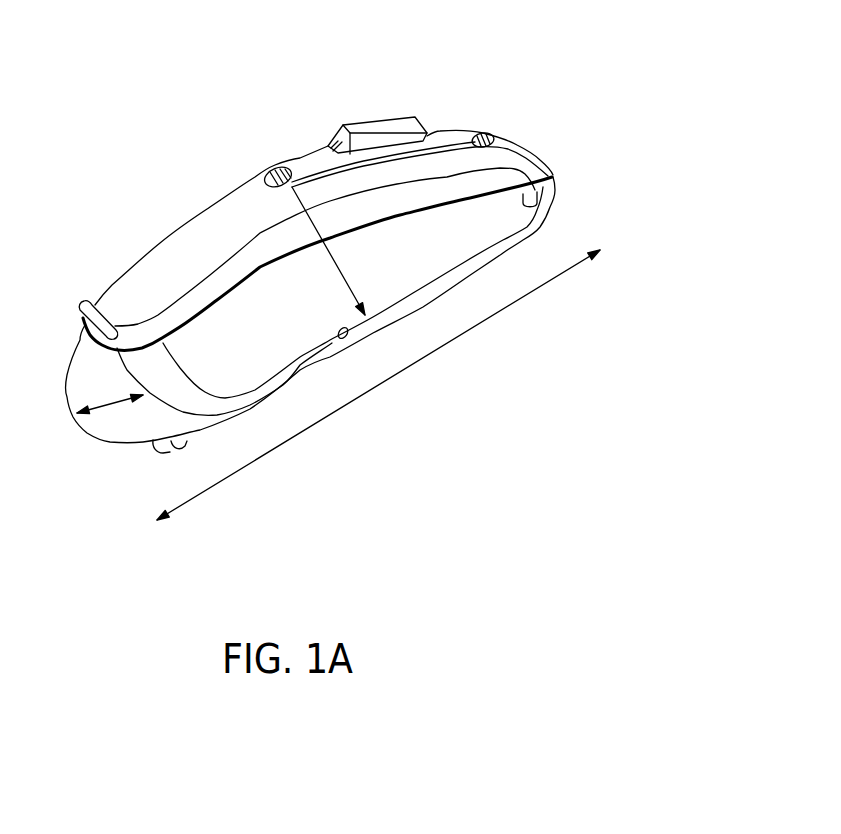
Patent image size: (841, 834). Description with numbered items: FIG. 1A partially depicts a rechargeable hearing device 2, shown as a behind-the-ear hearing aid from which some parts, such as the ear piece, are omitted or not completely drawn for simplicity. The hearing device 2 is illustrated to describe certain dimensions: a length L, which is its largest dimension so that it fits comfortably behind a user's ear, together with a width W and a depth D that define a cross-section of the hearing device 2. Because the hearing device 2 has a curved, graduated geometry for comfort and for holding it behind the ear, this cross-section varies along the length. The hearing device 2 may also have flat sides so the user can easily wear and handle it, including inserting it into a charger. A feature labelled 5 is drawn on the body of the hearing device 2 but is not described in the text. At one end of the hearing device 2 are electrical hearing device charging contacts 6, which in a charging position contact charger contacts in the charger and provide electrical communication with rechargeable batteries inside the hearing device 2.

The rechargeable hearing device 2 is at (445, 58).
The depth dimension line 5 is at (334, 257).
The electrical hearing device charging contacts 6 is at (182, 448).